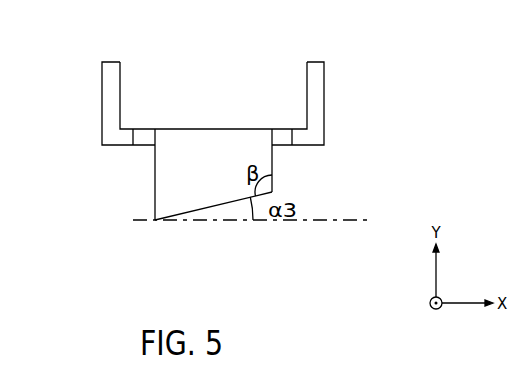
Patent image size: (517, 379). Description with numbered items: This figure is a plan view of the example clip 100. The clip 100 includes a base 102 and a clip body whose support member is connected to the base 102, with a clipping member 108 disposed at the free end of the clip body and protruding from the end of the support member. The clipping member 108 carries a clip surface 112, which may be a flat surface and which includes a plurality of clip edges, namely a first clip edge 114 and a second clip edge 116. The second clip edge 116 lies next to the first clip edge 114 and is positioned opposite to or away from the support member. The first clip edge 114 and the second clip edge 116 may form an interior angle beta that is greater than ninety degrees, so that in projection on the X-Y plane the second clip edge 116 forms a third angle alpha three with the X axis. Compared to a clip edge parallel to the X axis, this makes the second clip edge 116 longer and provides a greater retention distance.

The clip 100 is at (345, 48).
The base 102 is at (102, 71).
The clipping member 108 is at (155, 163).
The clip surface 112 is at (155, 190).
The first clip edge 114 is at (272, 170).
The second clip edge 116 is at (218, 206).